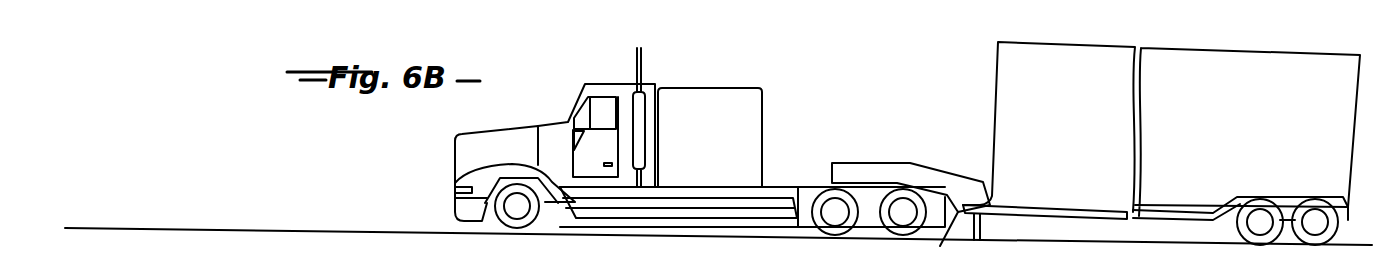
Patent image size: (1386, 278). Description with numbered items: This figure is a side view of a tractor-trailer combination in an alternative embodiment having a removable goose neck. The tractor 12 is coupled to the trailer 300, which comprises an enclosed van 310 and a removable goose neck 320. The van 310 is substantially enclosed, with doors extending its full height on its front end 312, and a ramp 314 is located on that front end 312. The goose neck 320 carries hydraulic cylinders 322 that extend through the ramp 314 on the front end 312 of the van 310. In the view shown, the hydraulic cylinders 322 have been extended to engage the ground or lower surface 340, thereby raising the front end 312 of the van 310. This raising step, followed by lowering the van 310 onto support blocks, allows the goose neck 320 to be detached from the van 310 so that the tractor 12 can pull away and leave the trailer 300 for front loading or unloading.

The tractor 12 is at (697, 86).
The trailer 300 is at (1123, 147).
The enclosed van 310 is at (1232, 50).
The front end 312 is at (995, 117).
The ramp 314 is at (928, 240).
The goose neck 320 is at (880, 162).
The hydraulic cylinders 322 is at (1018, 250).
The lower surface 340 is at (400, 231).